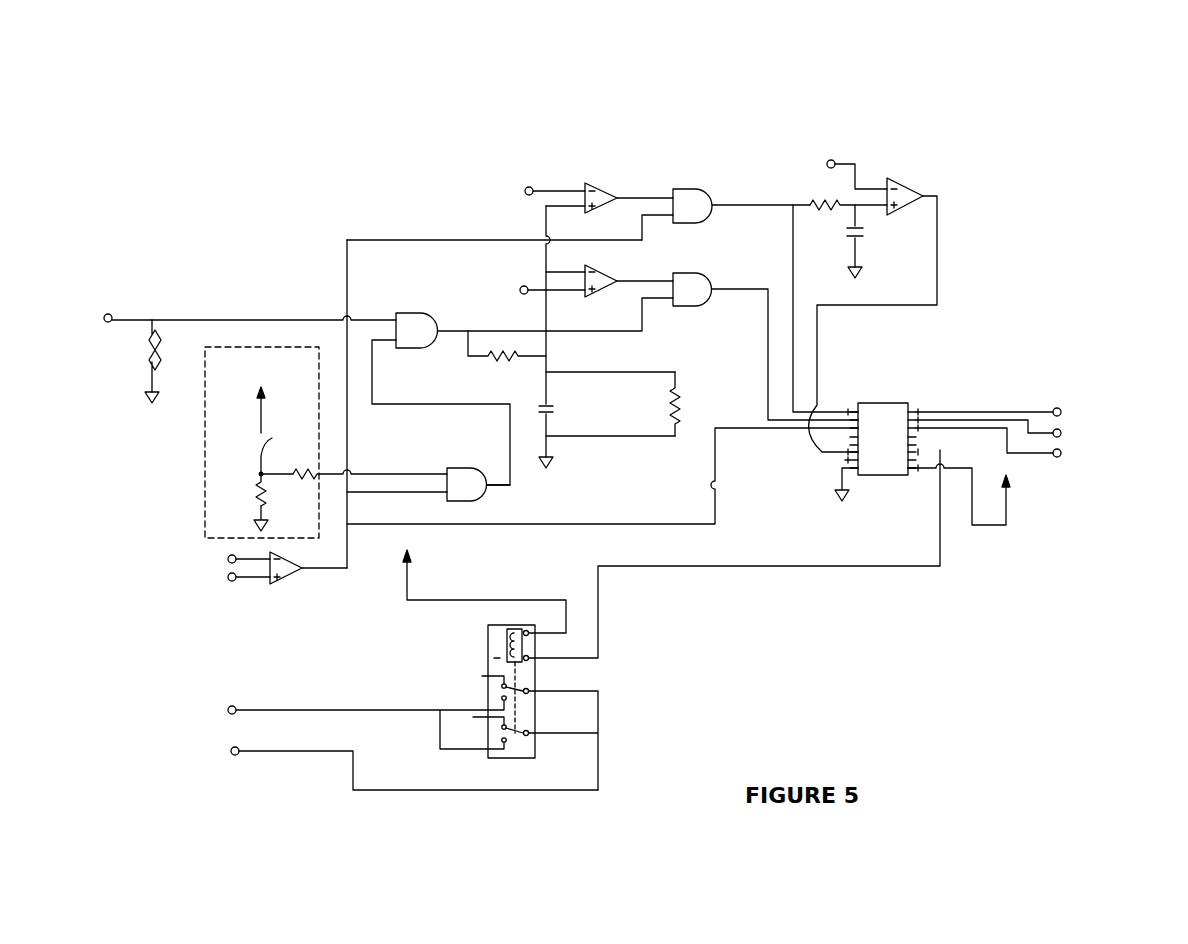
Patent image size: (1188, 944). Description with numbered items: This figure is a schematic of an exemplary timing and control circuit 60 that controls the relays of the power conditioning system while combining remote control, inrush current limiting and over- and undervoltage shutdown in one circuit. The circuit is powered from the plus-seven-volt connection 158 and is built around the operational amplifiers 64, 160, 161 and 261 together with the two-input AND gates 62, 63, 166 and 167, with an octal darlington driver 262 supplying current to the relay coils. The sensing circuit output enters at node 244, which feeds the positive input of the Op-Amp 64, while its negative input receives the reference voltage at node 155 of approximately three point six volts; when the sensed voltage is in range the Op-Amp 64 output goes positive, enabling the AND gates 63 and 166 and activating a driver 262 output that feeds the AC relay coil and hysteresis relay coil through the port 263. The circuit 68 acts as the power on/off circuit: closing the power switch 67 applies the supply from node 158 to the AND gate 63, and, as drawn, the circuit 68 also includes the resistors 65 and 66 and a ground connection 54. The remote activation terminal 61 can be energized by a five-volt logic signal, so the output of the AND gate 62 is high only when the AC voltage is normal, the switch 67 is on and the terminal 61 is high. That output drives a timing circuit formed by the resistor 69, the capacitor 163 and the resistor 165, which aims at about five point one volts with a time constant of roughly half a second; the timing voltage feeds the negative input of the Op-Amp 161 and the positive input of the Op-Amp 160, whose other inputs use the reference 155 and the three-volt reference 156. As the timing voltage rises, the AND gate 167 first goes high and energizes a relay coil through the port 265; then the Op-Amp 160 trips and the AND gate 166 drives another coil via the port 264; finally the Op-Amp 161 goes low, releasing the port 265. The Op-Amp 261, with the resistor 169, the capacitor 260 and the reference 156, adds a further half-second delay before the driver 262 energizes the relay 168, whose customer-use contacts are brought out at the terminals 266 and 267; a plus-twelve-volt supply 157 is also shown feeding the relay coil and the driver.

The timing and control circuit 60 is at (1062, 130).
The remote activation terminal 61 is at (104, 320).
The ground 54 is at (858, 496).
The AND gate 62 is at (416, 313).
The AND gate 63 is at (453, 468).
The operational amplifier 64 is at (287, 585).
The resistor 65 is at (257, 490).
The resistor 66 is at (304, 467).
The power switch 67 is at (273, 440).
The power on/off circuit 68 is at (205, 426).
The resistor 69 is at (486, 369).
The reference voltage node 155 is at (520, 289).
The voltage reference 156 is at (527, 187).
The +12V supply 157 is at (413, 553).
The +7V connection 158 is at (266, 392).
The operational amplifier 160 is at (596, 182).
The operational amplifier 161 is at (606, 272).
The capacitor 163 is at (551, 407).
The resistor 165 is at (681, 414).
The AND gate 166 is at (690, 189).
The AND gate 167 is at (690, 274).
The relay 168 is at (487, 648).
The resistor 169 is at (813, 213).
The node 244 is at (232, 582).
The capacitor 260 is at (861, 241).
The operational amplifier 261 is at (914, 182).
The octal darlington driver 262 is at (885, 403).
The port 263 is at (1061, 455).
The port 264 is at (1061, 412).
The port 265 is at (1061, 434).
The terminal 266 is at (230, 707).
The terminal 267 is at (237, 756).